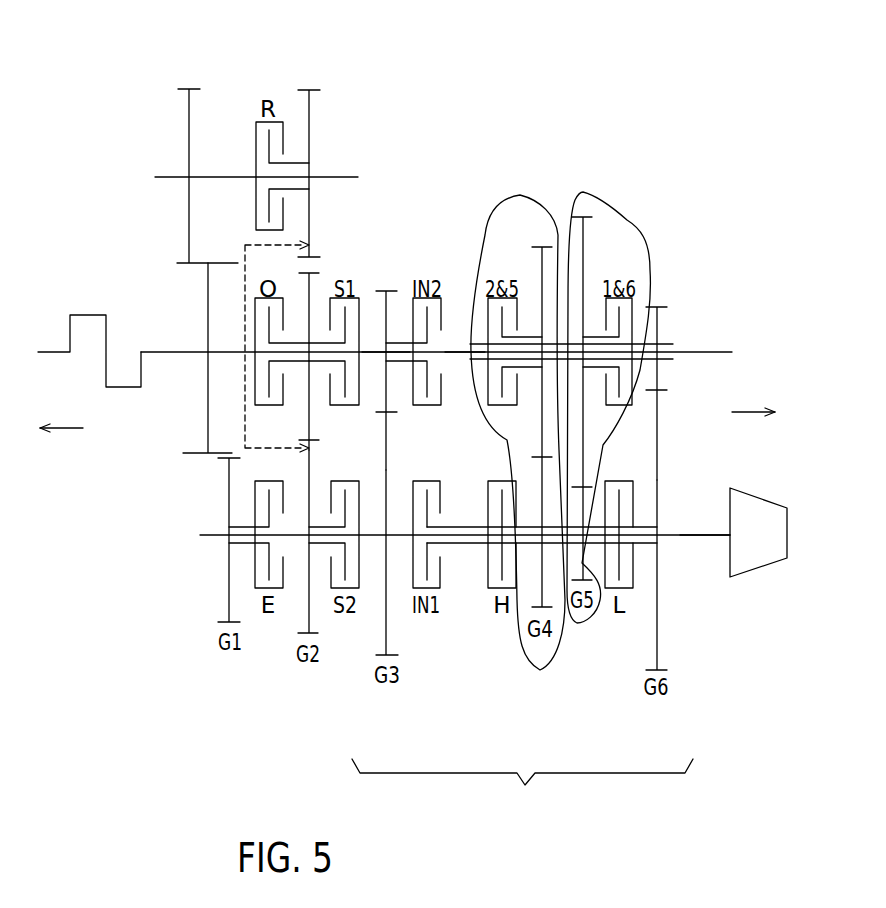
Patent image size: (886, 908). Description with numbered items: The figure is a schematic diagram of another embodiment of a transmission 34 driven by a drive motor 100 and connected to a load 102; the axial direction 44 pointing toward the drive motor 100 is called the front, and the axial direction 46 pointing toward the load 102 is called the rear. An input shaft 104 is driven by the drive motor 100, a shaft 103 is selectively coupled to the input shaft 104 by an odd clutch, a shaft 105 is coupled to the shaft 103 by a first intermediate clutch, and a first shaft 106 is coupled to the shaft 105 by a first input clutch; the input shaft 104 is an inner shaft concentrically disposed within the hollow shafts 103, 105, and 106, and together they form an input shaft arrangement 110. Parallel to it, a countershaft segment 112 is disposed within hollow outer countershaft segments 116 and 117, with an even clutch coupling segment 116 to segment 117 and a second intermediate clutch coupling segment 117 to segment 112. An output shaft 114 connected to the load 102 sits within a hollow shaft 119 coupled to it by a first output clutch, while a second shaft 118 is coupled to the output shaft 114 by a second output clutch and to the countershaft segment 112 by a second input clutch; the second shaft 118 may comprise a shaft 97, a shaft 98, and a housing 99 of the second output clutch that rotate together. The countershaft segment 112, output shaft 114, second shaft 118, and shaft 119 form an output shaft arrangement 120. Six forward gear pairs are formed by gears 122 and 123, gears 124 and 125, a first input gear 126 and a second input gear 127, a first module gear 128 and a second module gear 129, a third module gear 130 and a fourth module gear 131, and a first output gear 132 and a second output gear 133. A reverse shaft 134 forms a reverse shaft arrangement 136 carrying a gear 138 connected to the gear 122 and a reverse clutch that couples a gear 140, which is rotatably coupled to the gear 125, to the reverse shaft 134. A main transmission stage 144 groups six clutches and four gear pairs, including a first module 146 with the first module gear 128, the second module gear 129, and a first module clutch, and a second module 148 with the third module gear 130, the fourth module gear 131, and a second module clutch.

The transmission 34 is at (112, 62).
The axial direction 44 is at (67, 428).
The axial direction 46 is at (748, 412).
The shaft 97 is at (467, 527).
The shaft 98 is at (518, 478).
The housing of the clutch H 99 is at (502, 478).
The drive motor 100 is at (88, 315).
The load 102 is at (757, 570).
The shaft 103 is at (307, 343).
The input shaft 104 is at (177, 350).
The shaft 105 is at (371, 343).
The first shaft 106 is at (452, 343).
The input shaft arrangement 110 is at (702, 330).
The countershaft segment 112 is at (213, 537).
The output shaft 114 is at (697, 535).
The outer countershaft segment 116 is at (240, 543).
The outer countershaft segment 117 is at (297, 543).
The second shaft 118 is at (540, 592).
The shaft 119 is at (643, 545).
The output shaft arrangement 120 is at (685, 515).
The gear 122 is at (207, 398).
The gear 123 is at (227, 482).
The gear 124 is at (312, 307).
The gear 125 is at (310, 490).
The first input gear 126 is at (388, 320).
The second input gear 127 is at (387, 620).
The first module gear 128 is at (542, 275).
The second module gear 129 is at (515, 640).
The third module gear 130 is at (585, 243).
The fourth module gear 131 is at (600, 590).
The first output gear 132 is at (658, 327).
The second output gear 133 is at (657, 640).
The reverse shaft 134 is at (333, 172).
The reverse shaft arrangement 136 is at (403, 170).
The gear 138 is at (190, 130).
The gear 140 is at (310, 113).
The main transmission stage 144 is at (522, 788).
The first module 146 is at (522, 195).
The second module 148 is at (633, 220).